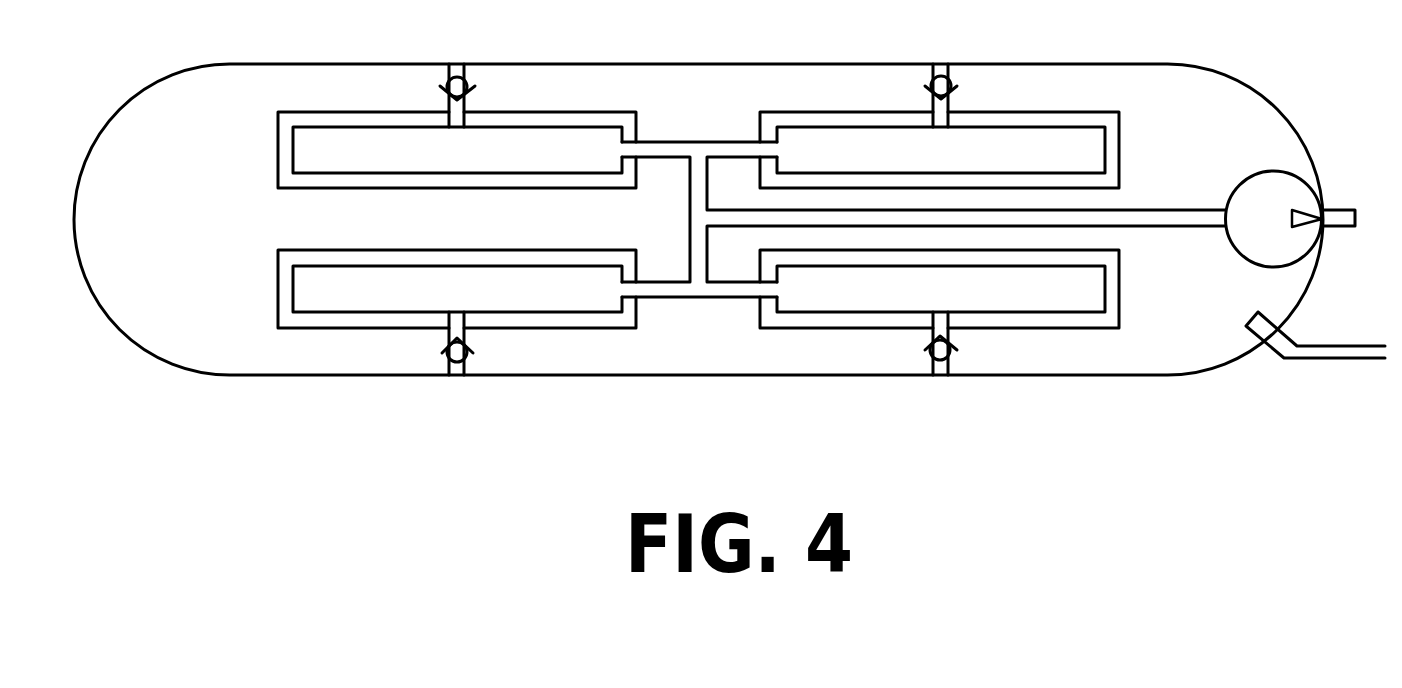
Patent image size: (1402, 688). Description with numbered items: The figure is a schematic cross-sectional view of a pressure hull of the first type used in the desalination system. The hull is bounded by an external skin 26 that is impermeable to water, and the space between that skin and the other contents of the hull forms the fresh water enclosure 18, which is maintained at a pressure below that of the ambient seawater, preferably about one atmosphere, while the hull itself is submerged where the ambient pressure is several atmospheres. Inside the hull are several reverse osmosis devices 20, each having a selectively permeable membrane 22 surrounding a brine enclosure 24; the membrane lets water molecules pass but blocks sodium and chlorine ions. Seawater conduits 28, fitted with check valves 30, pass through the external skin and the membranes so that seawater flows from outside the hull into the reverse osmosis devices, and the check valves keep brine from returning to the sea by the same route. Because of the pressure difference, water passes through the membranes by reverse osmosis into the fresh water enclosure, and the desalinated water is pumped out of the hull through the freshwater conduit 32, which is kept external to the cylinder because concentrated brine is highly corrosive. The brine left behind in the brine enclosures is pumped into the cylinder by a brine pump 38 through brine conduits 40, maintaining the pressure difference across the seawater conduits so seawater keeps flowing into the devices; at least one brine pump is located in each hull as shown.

The fresh water enclosure 18 is at (698, 248).
The reverse osmosis device 20 is at (642, 246).
The selectively permeable membrane 22 is at (577, 128).
The brine enclosure 24 is at (398, 153).
The external skin 26 is at (160, 83).
The seawater conduit 28 is at (460, 65).
The check valve 30 is at (472, 355).
The freshwater conduit 32 is at (1315, 360).
The brine pump 38 is at (1235, 188).
The brine conduit 40 is at (690, 218).